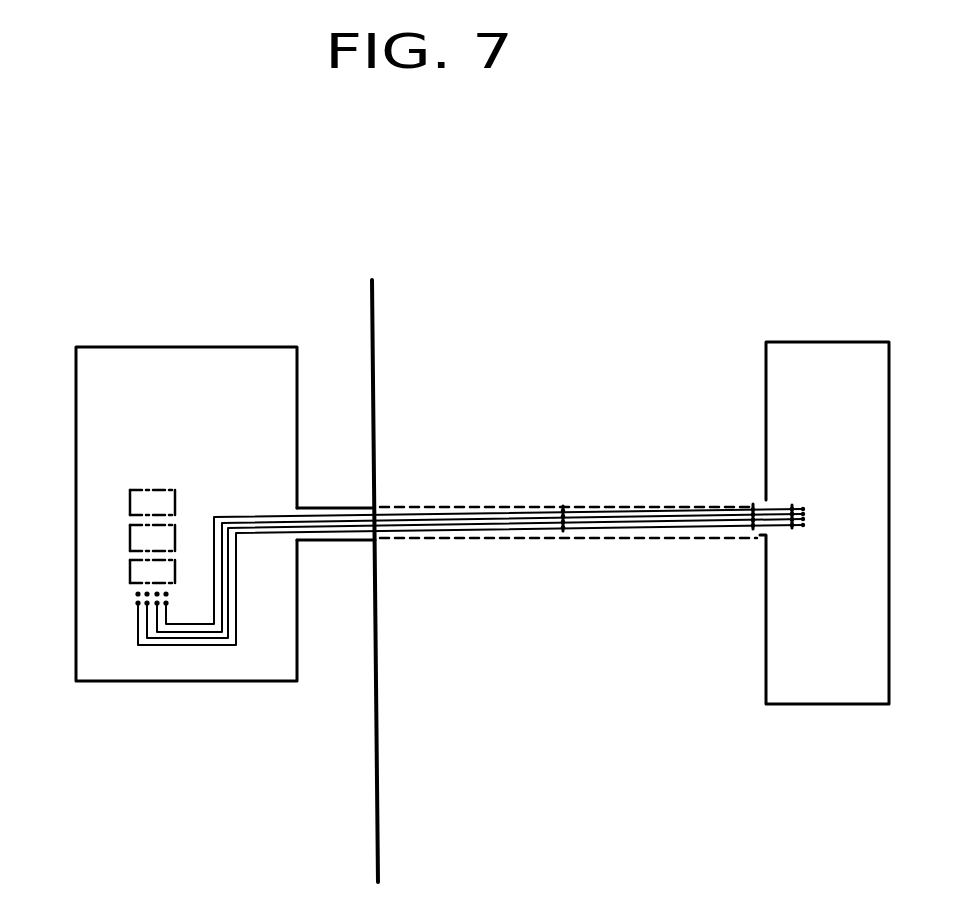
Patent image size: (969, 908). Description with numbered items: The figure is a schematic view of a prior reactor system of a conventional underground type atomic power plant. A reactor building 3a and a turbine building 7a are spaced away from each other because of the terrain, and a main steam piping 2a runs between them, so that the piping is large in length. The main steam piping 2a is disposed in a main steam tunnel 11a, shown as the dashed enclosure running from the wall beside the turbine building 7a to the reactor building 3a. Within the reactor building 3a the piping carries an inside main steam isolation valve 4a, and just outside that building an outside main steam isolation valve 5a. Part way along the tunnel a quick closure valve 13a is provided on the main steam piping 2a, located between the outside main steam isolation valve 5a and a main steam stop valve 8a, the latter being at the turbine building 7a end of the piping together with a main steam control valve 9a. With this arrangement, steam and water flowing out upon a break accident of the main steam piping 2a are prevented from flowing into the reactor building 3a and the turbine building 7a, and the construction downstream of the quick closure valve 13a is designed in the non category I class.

The turbine building 7a is at (193, 347).
The reactor building 3a is at (815, 342).
The main steam piping 2a is at (243, 516).
The main steam tunnel 11a is at (434, 506).
The quick closure valve 13a is at (563, 506).
The outside main steam isolation valve 5a is at (753, 505).
The inside main steam isolation valve 4a is at (792, 506).
The main steam control valve 9a is at (135, 593).
The main steam stop valve 8a is at (135, 604).